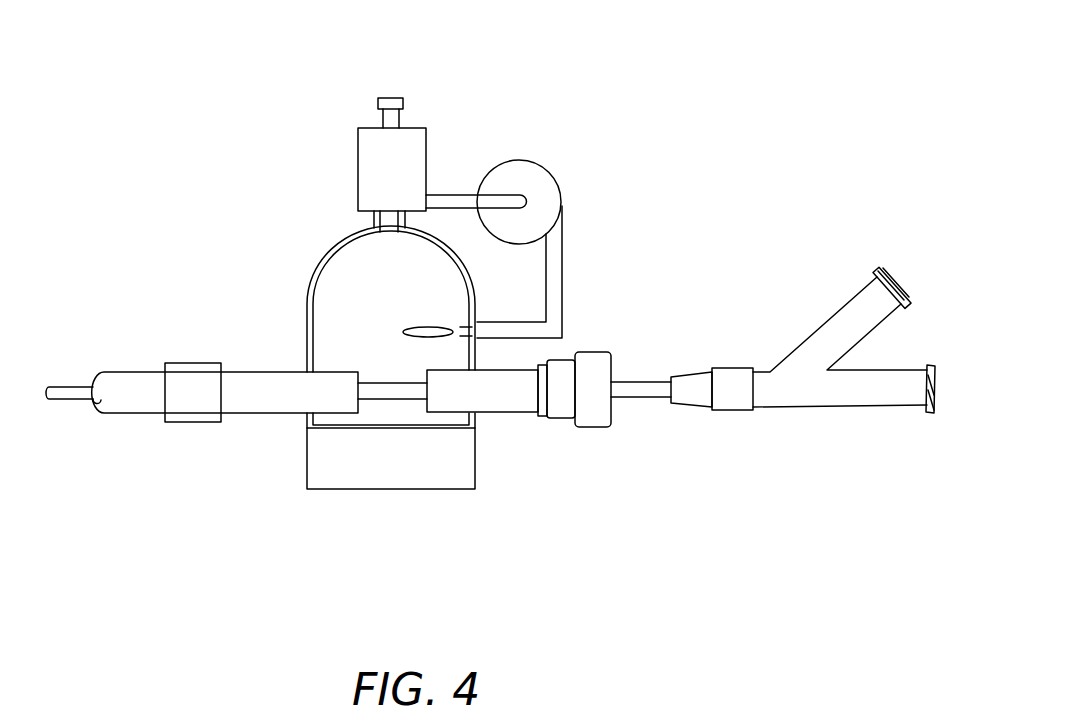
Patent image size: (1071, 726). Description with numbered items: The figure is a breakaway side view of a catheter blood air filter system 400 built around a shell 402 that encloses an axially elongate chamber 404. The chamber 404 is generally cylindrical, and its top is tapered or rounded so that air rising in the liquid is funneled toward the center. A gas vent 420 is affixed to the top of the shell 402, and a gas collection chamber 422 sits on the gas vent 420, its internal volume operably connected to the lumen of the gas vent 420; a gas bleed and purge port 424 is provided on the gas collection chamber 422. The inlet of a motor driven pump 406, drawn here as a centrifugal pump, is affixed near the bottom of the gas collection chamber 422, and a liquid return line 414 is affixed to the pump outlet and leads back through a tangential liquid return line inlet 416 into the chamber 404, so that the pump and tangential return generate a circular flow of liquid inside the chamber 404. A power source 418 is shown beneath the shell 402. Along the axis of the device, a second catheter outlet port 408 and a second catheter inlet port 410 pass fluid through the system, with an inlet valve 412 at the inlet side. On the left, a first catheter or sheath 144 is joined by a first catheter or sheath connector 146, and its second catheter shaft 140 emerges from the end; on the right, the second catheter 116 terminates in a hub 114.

The catheter blood air filter system 400 is at (175, 202).
The shell 402 is at (310, 290).
The chamber 404 is at (360, 287).
The motor driven pump 406 is at (543, 186).
The second catheter outlet port 408 is at (244, 387).
The second catheter inlet port 410 is at (507, 392).
The inlet valve 412 is at (595, 407).
The liquid return line 414 is at (555, 272).
The tangential liquid return line inlet 416 is at (432, 328).
The power source 418 is at (410, 467).
The gas vent 420 is at (393, 217).
The gas collection chamber 422 is at (410, 167).
The gas bleed and purge port 424 is at (395, 103).
The hub 114 is at (848, 327).
The second catheter 116 is at (635, 388).
The second catheter shaft 140 is at (57, 393).
The first catheter or sheath 144 is at (134, 377).
The first catheter or sheath connector 146 is at (190, 395).